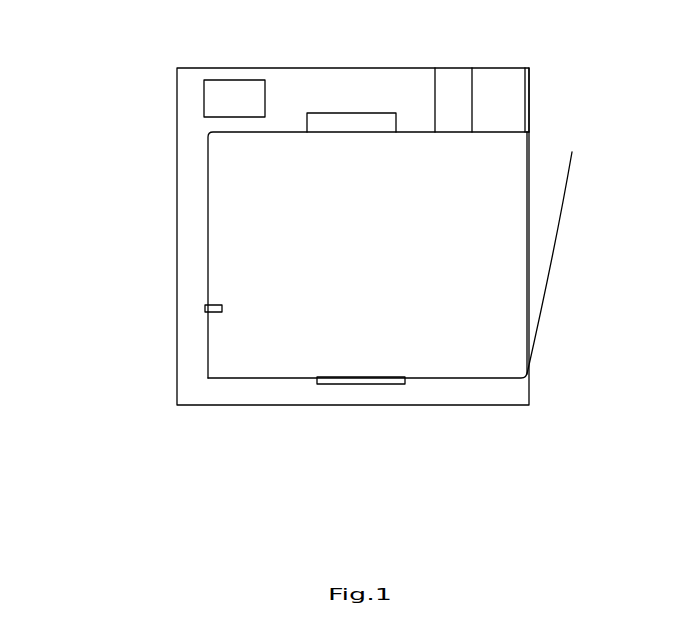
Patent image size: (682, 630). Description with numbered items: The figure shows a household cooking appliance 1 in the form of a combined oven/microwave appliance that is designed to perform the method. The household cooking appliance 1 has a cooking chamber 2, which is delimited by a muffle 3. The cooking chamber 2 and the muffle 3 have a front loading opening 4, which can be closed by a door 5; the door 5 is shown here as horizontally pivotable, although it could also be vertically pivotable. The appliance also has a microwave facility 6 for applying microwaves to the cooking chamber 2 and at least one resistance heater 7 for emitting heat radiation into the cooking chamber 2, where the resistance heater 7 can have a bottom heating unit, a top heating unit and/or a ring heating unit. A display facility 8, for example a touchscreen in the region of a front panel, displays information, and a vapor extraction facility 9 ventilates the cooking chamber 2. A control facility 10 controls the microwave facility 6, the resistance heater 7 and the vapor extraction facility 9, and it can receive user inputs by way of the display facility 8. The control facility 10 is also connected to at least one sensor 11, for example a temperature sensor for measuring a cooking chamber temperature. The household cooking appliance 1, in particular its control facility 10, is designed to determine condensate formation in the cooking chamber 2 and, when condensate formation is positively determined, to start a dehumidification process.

The household cooking appliance 1 is at (120, 86).
The cooking chamber 2 is at (443, 371).
The muffle 3 is at (233, 133).
The front loading opening 4 is at (540, 153).
The door 5 is at (560, 212).
The microwave facility 6 is at (332, 112).
The resistance heater 7 is at (340, 385).
The display facility 8 is at (533, 80).
The vapor extraction facility 9 is at (452, 68).
The control facility 10 is at (235, 80).
The sensor 11 is at (205, 309).